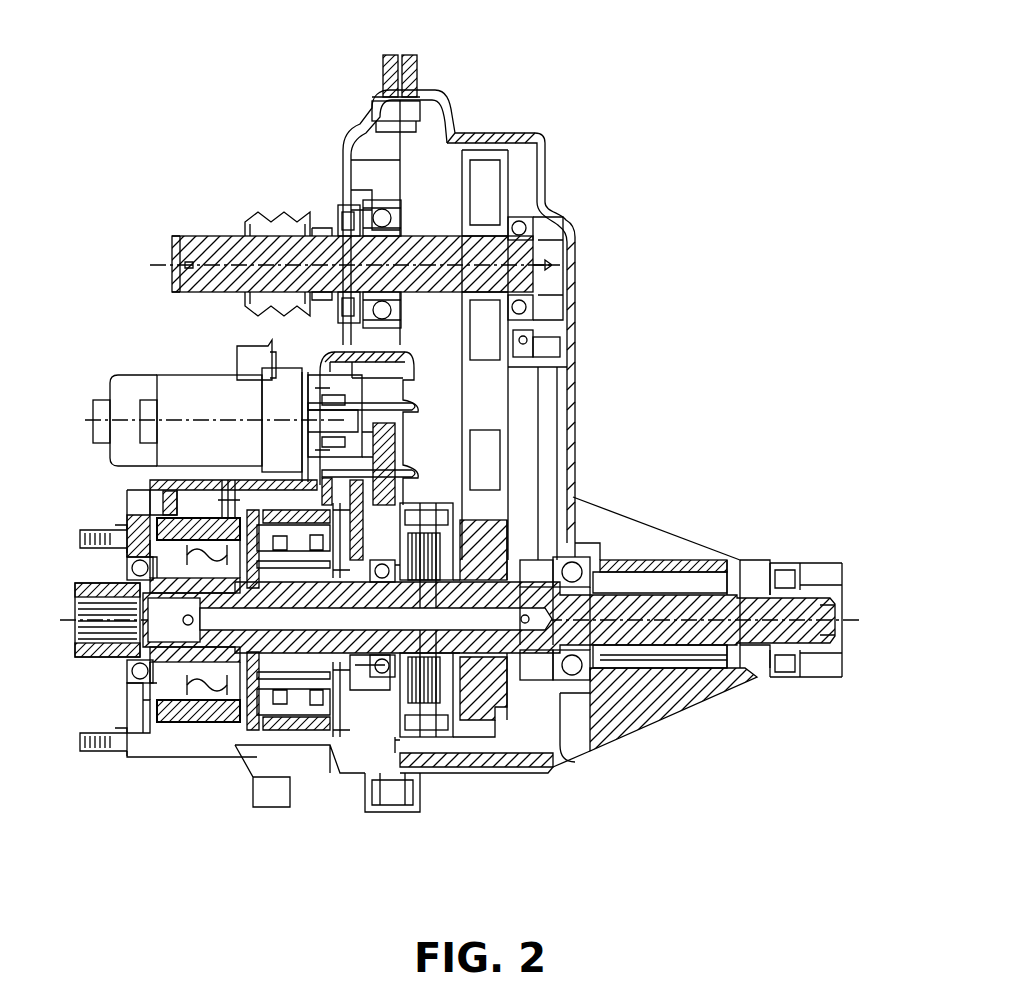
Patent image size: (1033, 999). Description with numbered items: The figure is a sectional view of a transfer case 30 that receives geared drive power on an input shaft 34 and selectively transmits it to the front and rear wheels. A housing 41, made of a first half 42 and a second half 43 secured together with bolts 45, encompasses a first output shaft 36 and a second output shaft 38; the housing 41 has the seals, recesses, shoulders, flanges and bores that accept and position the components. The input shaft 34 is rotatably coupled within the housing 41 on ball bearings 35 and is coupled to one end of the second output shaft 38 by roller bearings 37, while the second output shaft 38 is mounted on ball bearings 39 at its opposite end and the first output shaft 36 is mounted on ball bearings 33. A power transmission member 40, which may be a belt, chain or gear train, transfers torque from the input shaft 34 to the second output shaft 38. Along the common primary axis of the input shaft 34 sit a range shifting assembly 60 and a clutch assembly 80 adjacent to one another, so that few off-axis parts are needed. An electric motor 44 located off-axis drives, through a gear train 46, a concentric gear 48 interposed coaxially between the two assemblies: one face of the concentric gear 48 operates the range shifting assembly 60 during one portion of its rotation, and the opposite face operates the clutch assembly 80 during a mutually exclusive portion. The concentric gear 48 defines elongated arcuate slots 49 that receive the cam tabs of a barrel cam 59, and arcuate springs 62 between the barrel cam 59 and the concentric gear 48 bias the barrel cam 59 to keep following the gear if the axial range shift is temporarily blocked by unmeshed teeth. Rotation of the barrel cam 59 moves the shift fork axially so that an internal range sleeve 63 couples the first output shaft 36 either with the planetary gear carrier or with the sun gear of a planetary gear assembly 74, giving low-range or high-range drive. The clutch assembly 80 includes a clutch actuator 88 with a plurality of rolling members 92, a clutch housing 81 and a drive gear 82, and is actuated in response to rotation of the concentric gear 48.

The transfer case 30 is at (650, 63).
The ball bearings 33 is at (570, 587).
The input shaft 34 is at (168, 538).
The ball bearings 35 is at (128, 583).
The first output shaft 36 is at (748, 600).
The roller bearings 37 is at (522, 305).
The second output shaft 38 is at (203, 258).
The ball bearings 39 is at (352, 218).
The power transmission member 40 is at (487, 393).
The housing 41 is at (490, 135).
The first half 42 is at (346, 145).
The second half 43 is at (577, 228).
The electric motor 44 is at (192, 396).
The bolts 45 is at (420, 90).
The gear train 46 is at (397, 450).
The concentric gear 48 is at (403, 785).
The barrel-cam-engaging arcuate slots 49 is at (447, 553).
The barrel cam 59 is at (277, 707).
The range shifting assembly 60 is at (252, 660).
The arcuate springs 62 is at (353, 707).
The internal range sleeve 63 is at (188, 717).
The planetary gear assembly 74 is at (258, 520).
The clutch assembly 80 is at (590, 530).
The clutch housing 81 is at (455, 723).
The drive gear 82 is at (555, 722).
The clutch actuator 88 is at (358, 695).
The rolling members 92 is at (465, 715).